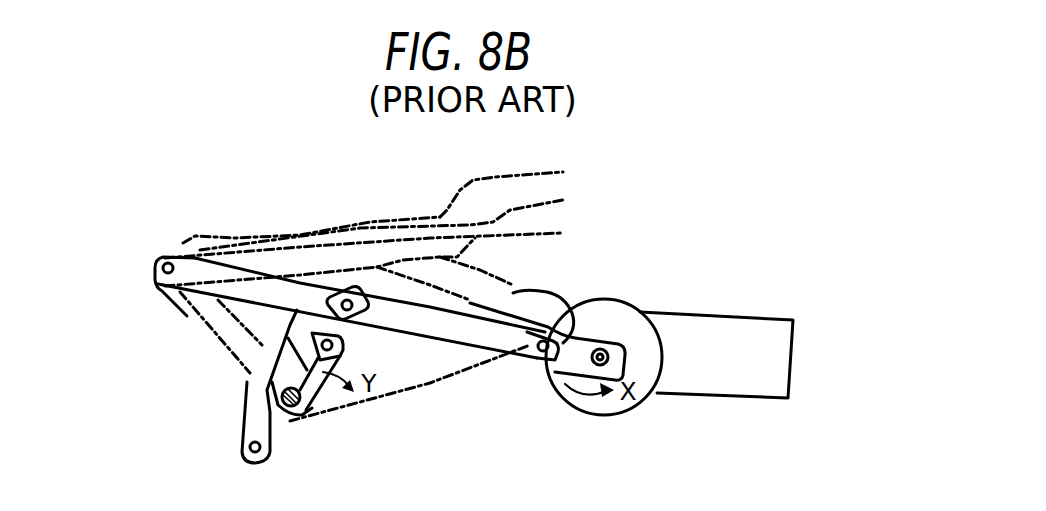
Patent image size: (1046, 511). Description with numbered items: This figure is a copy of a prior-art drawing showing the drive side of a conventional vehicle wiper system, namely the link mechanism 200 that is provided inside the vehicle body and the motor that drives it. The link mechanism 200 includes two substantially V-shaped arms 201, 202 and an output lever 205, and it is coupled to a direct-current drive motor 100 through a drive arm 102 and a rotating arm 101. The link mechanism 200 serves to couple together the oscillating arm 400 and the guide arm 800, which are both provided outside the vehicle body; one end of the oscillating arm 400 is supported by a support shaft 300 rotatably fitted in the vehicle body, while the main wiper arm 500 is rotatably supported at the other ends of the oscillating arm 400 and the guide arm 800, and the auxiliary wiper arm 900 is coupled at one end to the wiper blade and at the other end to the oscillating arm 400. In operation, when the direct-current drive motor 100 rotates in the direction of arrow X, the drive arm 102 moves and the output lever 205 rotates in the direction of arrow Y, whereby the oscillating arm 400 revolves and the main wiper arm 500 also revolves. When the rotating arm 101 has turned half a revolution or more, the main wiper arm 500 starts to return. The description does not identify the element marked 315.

The direct-current drive motor 100 is at (708, 312).
The rotating arm 101 is at (556, 372).
The drive arm 102 is at (490, 343).
The link mechanism 200 is at (373, 332).
The V-shaped arm 201 is at (270, 278).
The V-shaped arm 202 is at (245, 410).
The output lever 205 is at (280, 415).
The support shaft 300 is at (310, 400).
The reference line 315 is at (452, 370).
The oscillating arm 400 is at (227, 348).
The main wiper arm 500 is at (533, 187).
The guide arm 800 is at (513, 290).
The auxiliary wiper arm 900 is at (248, 242).